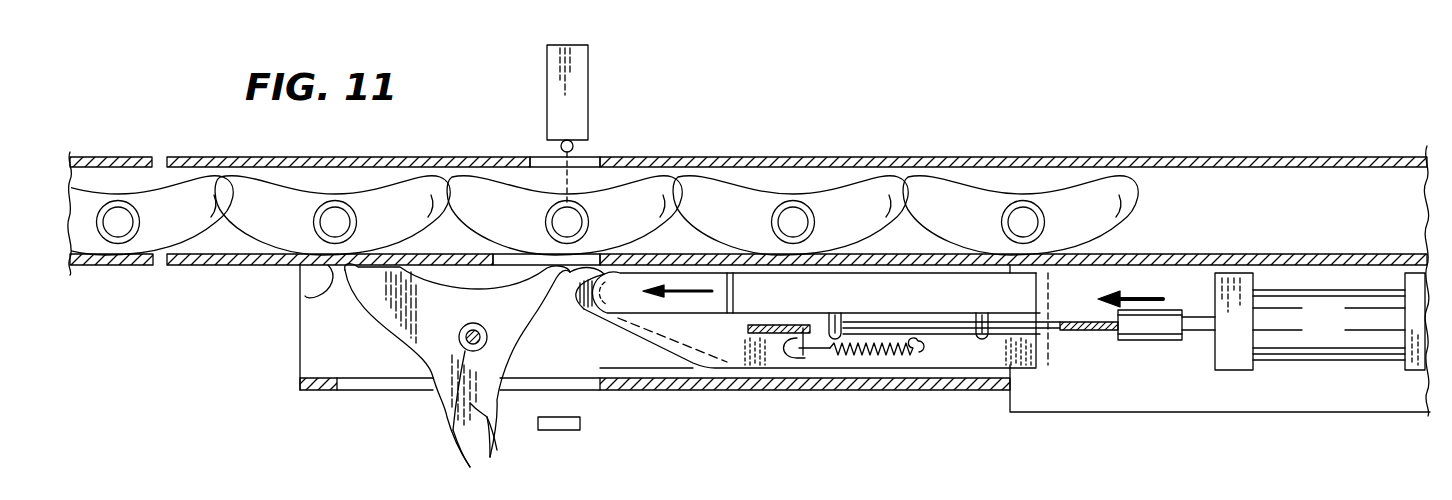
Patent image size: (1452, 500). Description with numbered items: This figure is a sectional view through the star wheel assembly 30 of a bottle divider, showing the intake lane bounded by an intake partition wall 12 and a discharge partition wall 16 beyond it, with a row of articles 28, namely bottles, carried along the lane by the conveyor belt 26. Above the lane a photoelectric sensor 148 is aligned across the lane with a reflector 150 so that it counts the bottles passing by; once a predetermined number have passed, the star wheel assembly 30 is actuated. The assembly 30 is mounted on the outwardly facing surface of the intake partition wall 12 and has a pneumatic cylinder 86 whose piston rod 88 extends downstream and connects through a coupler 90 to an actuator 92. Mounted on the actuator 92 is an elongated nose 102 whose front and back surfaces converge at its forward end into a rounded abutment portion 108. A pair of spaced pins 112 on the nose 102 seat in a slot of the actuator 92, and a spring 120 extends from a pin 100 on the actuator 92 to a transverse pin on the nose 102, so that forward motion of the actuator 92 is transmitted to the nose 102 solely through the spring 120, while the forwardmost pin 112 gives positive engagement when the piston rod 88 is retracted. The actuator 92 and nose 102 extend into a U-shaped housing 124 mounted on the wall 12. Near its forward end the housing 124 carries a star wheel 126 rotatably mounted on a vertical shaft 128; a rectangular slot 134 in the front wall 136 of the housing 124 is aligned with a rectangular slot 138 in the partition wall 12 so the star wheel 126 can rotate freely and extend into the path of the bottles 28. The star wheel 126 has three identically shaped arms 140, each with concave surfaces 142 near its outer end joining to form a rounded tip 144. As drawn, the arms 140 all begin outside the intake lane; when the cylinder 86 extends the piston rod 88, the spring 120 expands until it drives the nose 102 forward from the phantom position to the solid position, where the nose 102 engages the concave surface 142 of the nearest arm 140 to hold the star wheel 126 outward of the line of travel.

The intake partition wall 12 is at (1372, 153).
The discharge partition wall 16 is at (118, 157).
The conveyor belt 26 is at (1250, 190).
The articles 28 is at (883, 182).
The star wheel assembly 30 is at (1117, 412).
The pneumatic cylinder 86 is at (1342, 344).
The piston rod 88 is at (1197, 334).
The coupler 90 is at (1157, 330).
The actuator 92 is at (1082, 333).
The pin 100 is at (792, 362).
The nose 102 is at (642, 303).
The rounded abutment portion 108 is at (675, 333).
The pins 112 is at (1000, 292).
The spring 120 is at (897, 355).
The housing 124 is at (685, 383).
The star wheel 126 is at (443, 357).
The vertical shaft 128 is at (502, 323).
The rectangular slot 134 is at (343, 392).
The front wall 136 is at (737, 388).
The rectangular slot 138 is at (305, 289).
The arms 140 is at (490, 450).
The concave surfaces 142 is at (460, 432).
The rounded tip 144 is at (472, 463).
The photoelectric sensor 148 is at (590, 118).
The reflector 150 is at (583, 422).